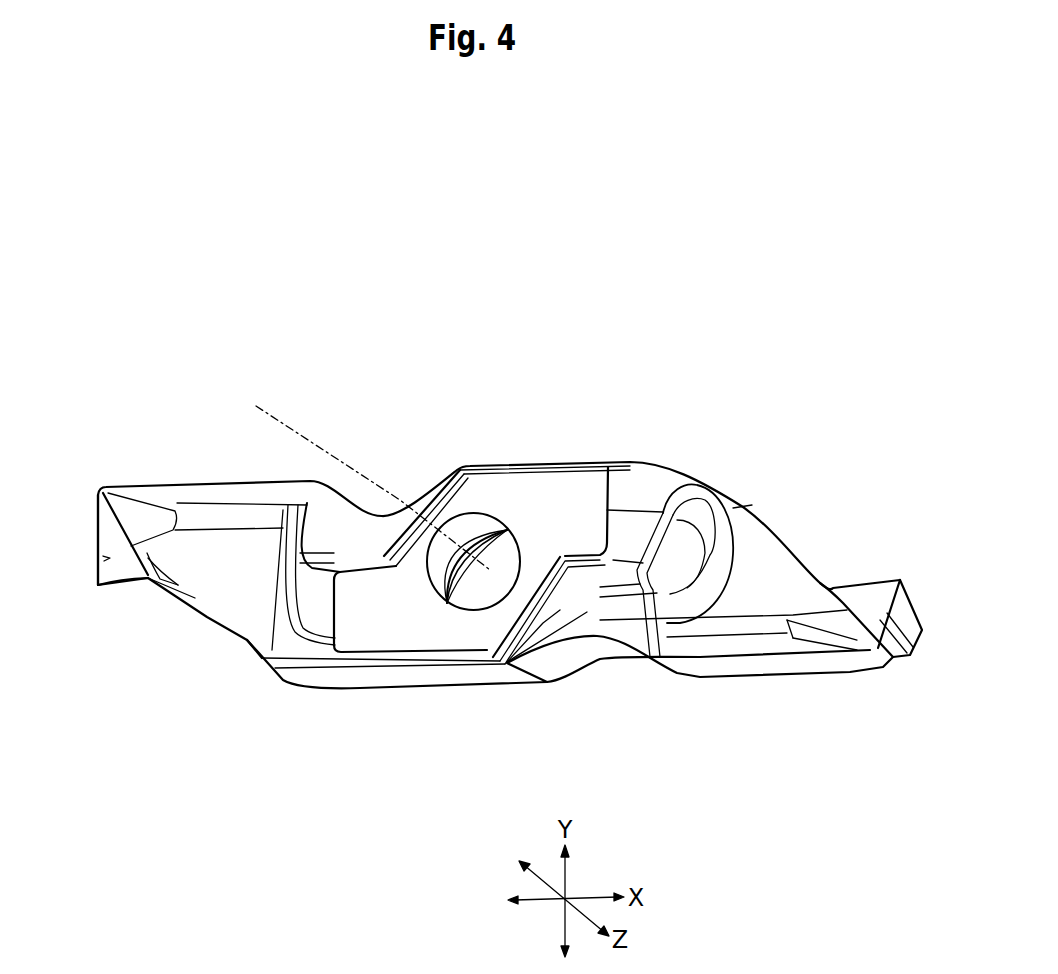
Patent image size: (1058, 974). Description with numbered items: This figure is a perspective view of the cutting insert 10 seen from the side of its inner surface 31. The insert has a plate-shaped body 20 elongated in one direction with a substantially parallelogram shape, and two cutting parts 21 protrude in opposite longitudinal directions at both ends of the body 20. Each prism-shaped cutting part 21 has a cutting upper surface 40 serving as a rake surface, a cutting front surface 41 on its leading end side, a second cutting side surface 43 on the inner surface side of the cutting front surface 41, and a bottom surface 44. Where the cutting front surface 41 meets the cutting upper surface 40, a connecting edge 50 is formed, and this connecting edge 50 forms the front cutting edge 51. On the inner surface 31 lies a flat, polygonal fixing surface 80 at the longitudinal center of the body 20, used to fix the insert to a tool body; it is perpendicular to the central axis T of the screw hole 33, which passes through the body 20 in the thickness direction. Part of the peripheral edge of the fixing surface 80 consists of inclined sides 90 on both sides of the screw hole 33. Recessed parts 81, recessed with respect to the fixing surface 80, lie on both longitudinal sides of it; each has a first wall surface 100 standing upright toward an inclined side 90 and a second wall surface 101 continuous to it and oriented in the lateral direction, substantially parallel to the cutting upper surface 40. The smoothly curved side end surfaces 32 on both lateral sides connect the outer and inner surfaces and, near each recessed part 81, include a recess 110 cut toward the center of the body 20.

The cutting insert 10 is at (517, 348).
The body 20 is at (655, 457).
The cutting part 21 is at (100, 588).
The inner surface 31 is at (268, 496).
The side end surface 32 is at (590, 462).
The screw hole 33 is at (500, 490).
The cutting upper surface 40 is at (130, 584).
The cutting front surface 41 is at (100, 575).
The second cutting side surface 43 is at (118, 548).
The bottom surface 44 is at (110, 488).
The connecting edge 50 is at (112, 587).
The front cutting edge 51 is at (120, 585).
The fixing surface 80 is at (380, 641).
The recessed part 81 is at (357, 537).
The inclined side 90 is at (463, 513).
The first wall surface 100 is at (405, 522).
The second wall surface 101 is at (302, 505).
The recess 110 is at (400, 527).
The central axis T is at (363, 476).